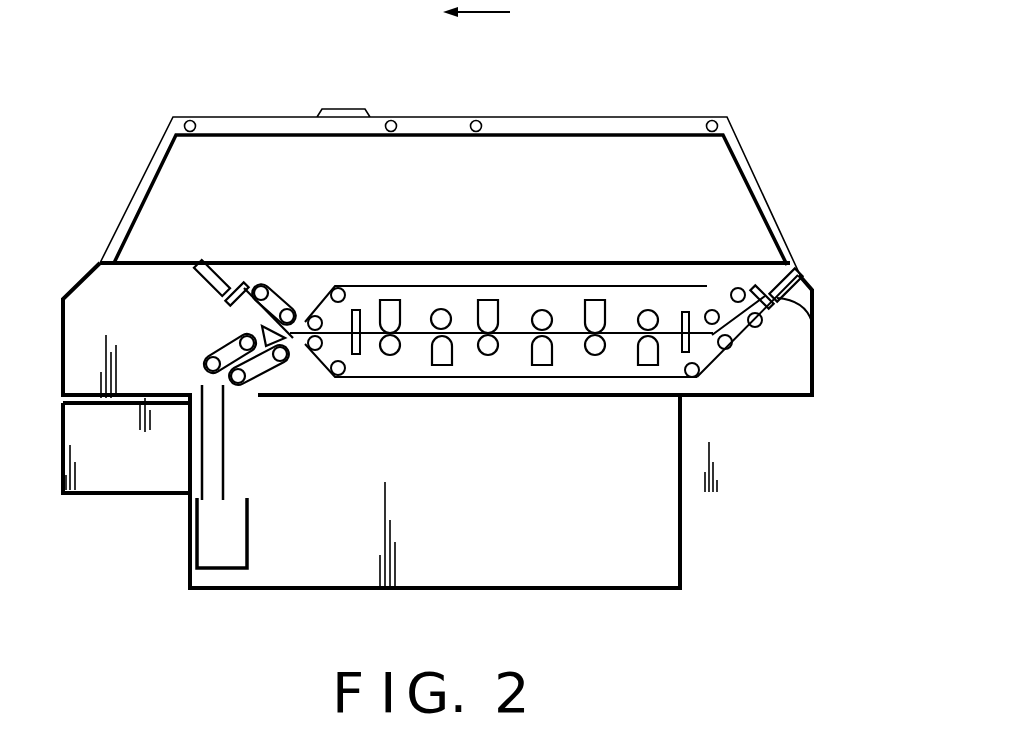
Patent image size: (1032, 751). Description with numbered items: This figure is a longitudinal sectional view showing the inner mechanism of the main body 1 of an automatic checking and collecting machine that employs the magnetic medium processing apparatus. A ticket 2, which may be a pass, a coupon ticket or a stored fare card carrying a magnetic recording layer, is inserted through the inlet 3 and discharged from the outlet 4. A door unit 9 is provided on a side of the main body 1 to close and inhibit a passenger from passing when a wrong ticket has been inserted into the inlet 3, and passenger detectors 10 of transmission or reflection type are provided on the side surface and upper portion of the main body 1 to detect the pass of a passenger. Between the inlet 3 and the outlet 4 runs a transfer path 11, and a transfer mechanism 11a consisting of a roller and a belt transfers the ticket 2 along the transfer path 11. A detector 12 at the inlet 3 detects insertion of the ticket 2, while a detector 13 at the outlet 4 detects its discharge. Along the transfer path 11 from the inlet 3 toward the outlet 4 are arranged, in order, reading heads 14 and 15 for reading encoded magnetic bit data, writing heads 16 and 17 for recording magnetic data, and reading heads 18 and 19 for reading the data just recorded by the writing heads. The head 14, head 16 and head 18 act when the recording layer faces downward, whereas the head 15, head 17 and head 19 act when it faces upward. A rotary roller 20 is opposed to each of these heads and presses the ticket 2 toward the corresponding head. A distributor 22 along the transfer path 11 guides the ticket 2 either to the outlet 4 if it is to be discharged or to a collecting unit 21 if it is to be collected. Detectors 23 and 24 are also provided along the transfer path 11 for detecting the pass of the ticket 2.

The main body 1 is at (824, 54).
The ticket 2 is at (812, 262).
The inlet 3 is at (803, 277).
The outlet 4 is at (203, 262).
The door unit 9 is at (118, 482).
The passenger detectors 10 is at (190, 120).
The transfer path 11 is at (415, 332).
The transfer mechanism 11a is at (752, 330).
The detector 12 is at (812, 326).
The detector 13 is at (247, 280).
The reading head 14 is at (648, 366).
The reading head 15 is at (595, 300).
The writing head 16 is at (542, 366).
The writing head 17 is at (488, 300).
The reading head 18 is at (442, 366).
The reading head 19 is at (388, 300).
The rotary roller 20 is at (441, 308).
The collecting unit 21 is at (235, 534).
The distributor 22 is at (262, 331).
The detector 23 is at (690, 345).
The detector 24 is at (353, 355).